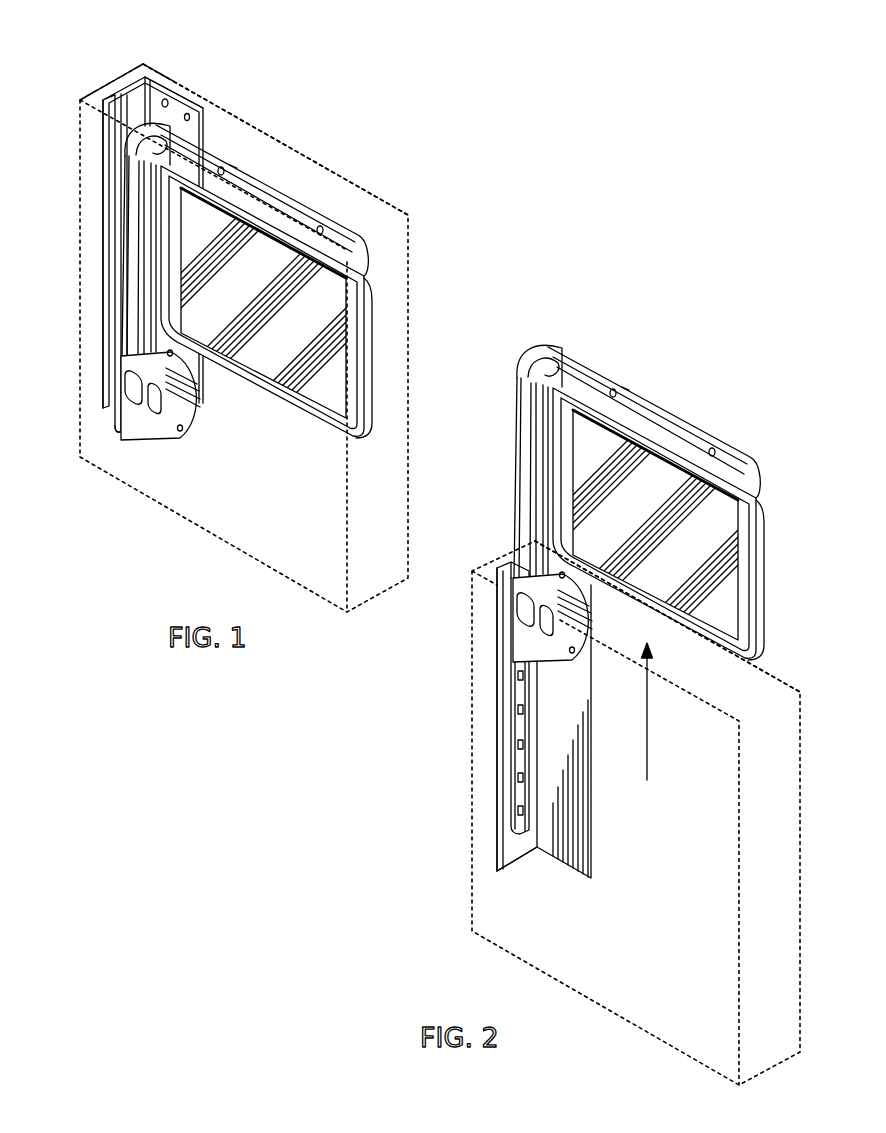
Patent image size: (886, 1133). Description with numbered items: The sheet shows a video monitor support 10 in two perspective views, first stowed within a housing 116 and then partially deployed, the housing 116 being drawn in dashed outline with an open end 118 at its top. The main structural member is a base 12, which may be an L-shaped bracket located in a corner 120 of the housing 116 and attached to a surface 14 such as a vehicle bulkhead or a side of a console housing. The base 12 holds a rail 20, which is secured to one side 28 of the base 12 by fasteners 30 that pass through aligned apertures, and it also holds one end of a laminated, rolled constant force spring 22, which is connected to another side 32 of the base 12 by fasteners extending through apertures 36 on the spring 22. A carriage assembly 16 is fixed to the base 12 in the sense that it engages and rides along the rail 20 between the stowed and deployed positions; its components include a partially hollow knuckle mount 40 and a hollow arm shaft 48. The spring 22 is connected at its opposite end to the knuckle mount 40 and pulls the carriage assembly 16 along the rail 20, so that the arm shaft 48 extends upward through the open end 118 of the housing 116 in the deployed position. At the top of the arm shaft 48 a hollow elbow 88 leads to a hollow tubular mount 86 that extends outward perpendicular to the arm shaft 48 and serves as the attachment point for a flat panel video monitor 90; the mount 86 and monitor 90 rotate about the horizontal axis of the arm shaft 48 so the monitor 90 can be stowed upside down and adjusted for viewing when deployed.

In FIG. 1, the video monitor support 10 is at (273, 250).
In FIG. 2, the video monitor support 10 is at (647, 482).
In FIG. 1, the base 12 is at (118, 93).
In FIG. 2, the base 12 is at (497, 717).
In FIG. 1, the surface 14 is at (86, 270).
In FIG. 2, the surface 14 is at (485, 638).
In FIG. 1, the carriage assembly 16 is at (94, 423).
In FIG. 2, the rail 20 is at (510, 793).
In FIG. 1, the constant force spring 22 is at (172, 105).
In FIG. 2, the side of the base 28 is at (515, 850).
In FIG. 2, the fasteners 30 is at (522, 675).
In FIG. 2, the another side of the base 32 is at (572, 688).
In FIG. 1, the apertures 36 is at (190, 116).
In FIG. 1, the knuckle mount 40 is at (190, 427).
In FIG. 1, the arm shaft 48 is at (130, 190).
In FIG. 2, the arm shaft 48 is at (520, 438).
In FIG. 1, the mount 86 is at (300, 202).
In FIG. 2, the mount 86 is at (697, 432).
In FIG. 2, the elbow 88 is at (552, 337).
In FIG. 1, the video monitor 90 is at (375, 355).
In FIG. 2, the video monitor 90 is at (767, 562).
In FIG. 1, the housing 116 is at (410, 262).
In FIG. 2, the housing 116 is at (473, 863).
In FIG. 1, the open end 118 is at (288, 166).
In FIG. 2, the open end 118 is at (767, 688).
In FIG. 1, the corner 120 is at (156, 50).